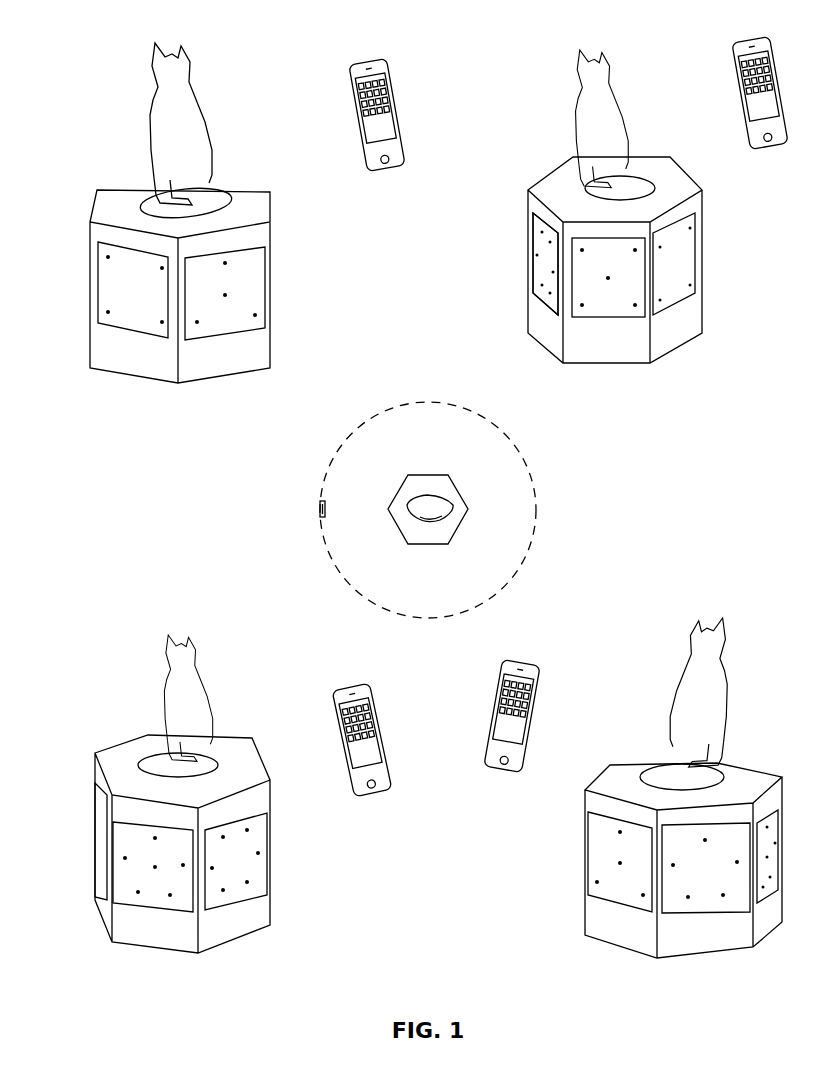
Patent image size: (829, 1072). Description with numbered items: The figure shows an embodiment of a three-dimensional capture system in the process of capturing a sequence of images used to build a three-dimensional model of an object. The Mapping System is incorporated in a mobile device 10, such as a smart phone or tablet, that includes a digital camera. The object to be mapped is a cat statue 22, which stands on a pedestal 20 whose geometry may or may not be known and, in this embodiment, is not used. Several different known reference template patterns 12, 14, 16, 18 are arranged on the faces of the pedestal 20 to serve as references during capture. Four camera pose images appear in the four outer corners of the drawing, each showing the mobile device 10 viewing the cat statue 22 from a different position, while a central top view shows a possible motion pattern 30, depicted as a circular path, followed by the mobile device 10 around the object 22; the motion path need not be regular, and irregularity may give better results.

The mobile device 10 is at (352, 72).
The reference template pattern 12 is at (257, 297).
The reference template pattern 14 is at (108, 285).
The reference template pattern 16 is at (628, 272).
The reference template pattern 18 is at (538, 265).
The pedestal 20 is at (257, 357).
The cat statue 22 is at (150, 60).
The motion pattern 30 is at (348, 441).